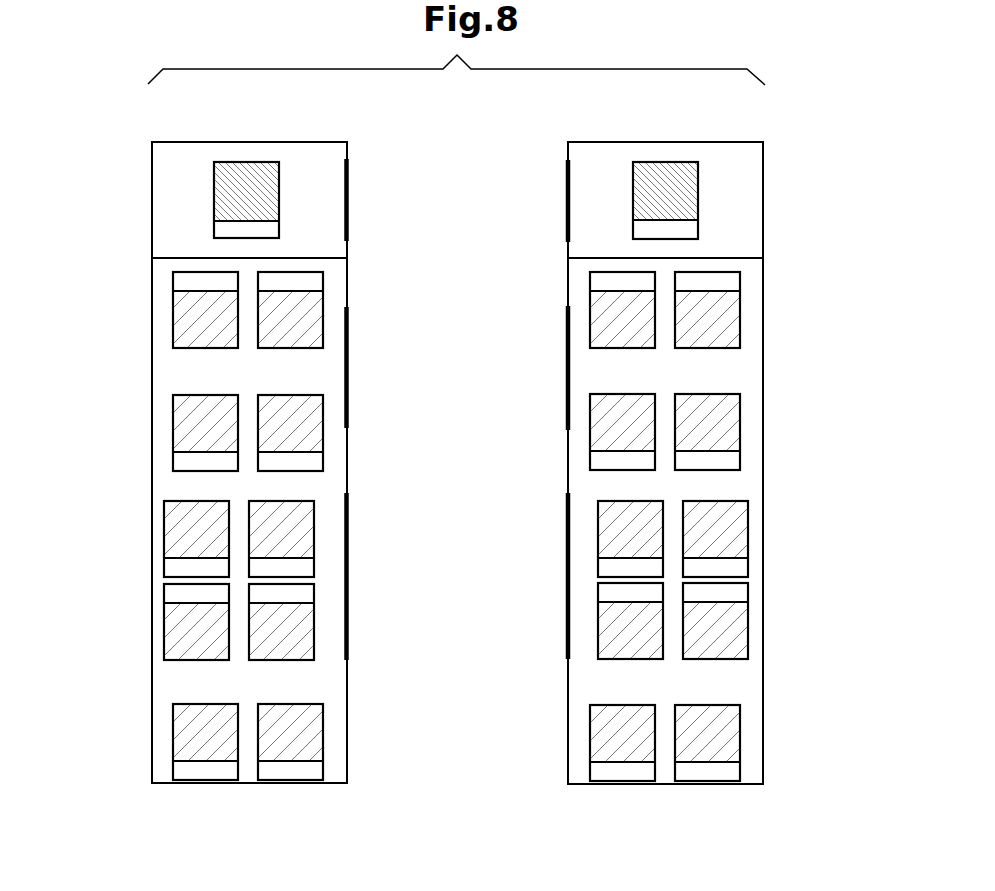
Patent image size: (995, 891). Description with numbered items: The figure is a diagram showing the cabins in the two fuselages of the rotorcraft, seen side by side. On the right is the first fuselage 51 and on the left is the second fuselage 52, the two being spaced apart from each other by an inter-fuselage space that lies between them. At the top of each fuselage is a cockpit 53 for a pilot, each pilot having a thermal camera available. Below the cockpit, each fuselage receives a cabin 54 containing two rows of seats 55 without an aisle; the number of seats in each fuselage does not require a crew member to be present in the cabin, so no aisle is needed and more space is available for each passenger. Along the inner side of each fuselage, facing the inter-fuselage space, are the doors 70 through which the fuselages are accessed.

The first fuselage 51 is at (796, 187).
The second fuselage 52 is at (104, 199).
The cockpit 53 is at (165, 236).
The cabin 54 is at (167, 368).
The seats 55 is at (307, 326).
The door 70 is at (348, 403).